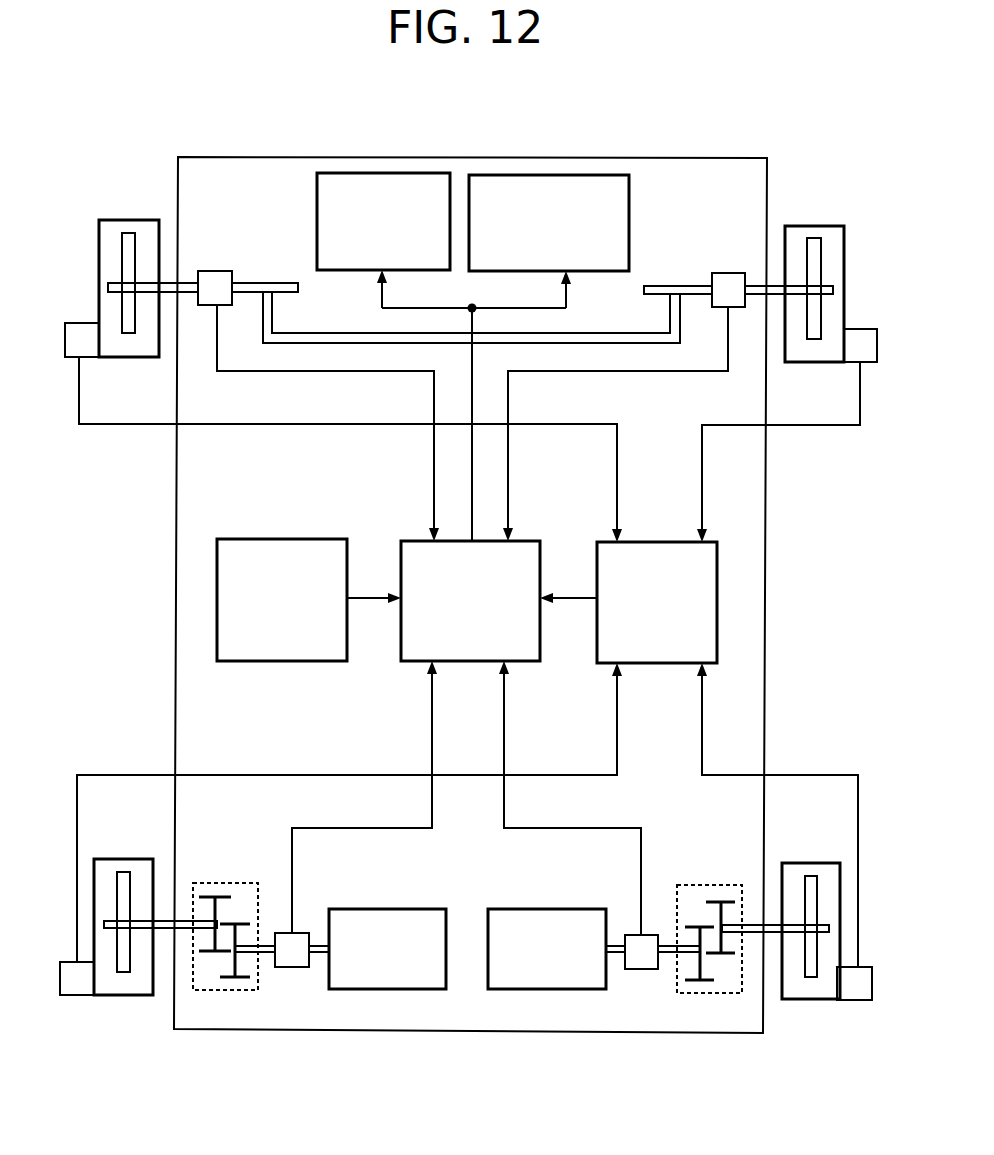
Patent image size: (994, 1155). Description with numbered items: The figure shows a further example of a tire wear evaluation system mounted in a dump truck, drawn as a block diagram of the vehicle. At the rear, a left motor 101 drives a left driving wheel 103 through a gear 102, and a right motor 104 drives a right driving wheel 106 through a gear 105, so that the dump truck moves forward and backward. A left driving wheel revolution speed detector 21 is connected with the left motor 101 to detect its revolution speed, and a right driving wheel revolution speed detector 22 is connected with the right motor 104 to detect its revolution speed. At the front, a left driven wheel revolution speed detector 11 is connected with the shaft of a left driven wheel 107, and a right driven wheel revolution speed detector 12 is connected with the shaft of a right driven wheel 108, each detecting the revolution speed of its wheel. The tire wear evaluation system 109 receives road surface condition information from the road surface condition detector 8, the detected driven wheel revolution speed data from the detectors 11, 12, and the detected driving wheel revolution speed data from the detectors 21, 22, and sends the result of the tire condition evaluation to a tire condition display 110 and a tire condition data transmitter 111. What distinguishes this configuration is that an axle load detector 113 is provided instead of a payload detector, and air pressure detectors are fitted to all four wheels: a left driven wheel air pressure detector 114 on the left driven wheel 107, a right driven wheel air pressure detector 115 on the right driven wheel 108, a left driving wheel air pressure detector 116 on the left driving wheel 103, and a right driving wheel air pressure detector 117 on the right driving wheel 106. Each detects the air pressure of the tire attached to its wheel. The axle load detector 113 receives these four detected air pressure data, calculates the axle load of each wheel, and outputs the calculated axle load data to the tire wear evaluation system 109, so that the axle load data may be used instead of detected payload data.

The road surface condition detector 8 is at (278, 539).
The left driven wheel revolution speed detector 11 is at (217, 271).
The right driven wheel revolution speed detector 12 is at (731, 273).
The left driving wheel revolution speed detector 21 is at (290, 967).
The right driving wheel revolution speed detector 22 is at (641, 969).
The left motor 101 is at (395, 909).
The gear 102 is at (222, 883).
The left driving wheel 103 is at (131, 859).
The right motor 104 is at (556, 909).
The gear 105 is at (715, 885).
The right driving wheel 106 is at (808, 863).
The left driven wheel 107 is at (136, 220).
The right driven wheel 108 is at (812, 226).
The tire wear evaluation system 109 is at (541, 541).
The tire condition display 110 is at (392, 173).
The tire condition data transmitter 111 is at (572, 175).
The axle load detector 113 is at (653, 542).
The left driven wheel air pressure detector 114 is at (80, 323).
The right driven wheel air pressure detector 115 is at (862, 329).
The left driving wheel air pressure detector 116 is at (80, 995).
The right driving wheel air pressure detector 117 is at (852, 1000).